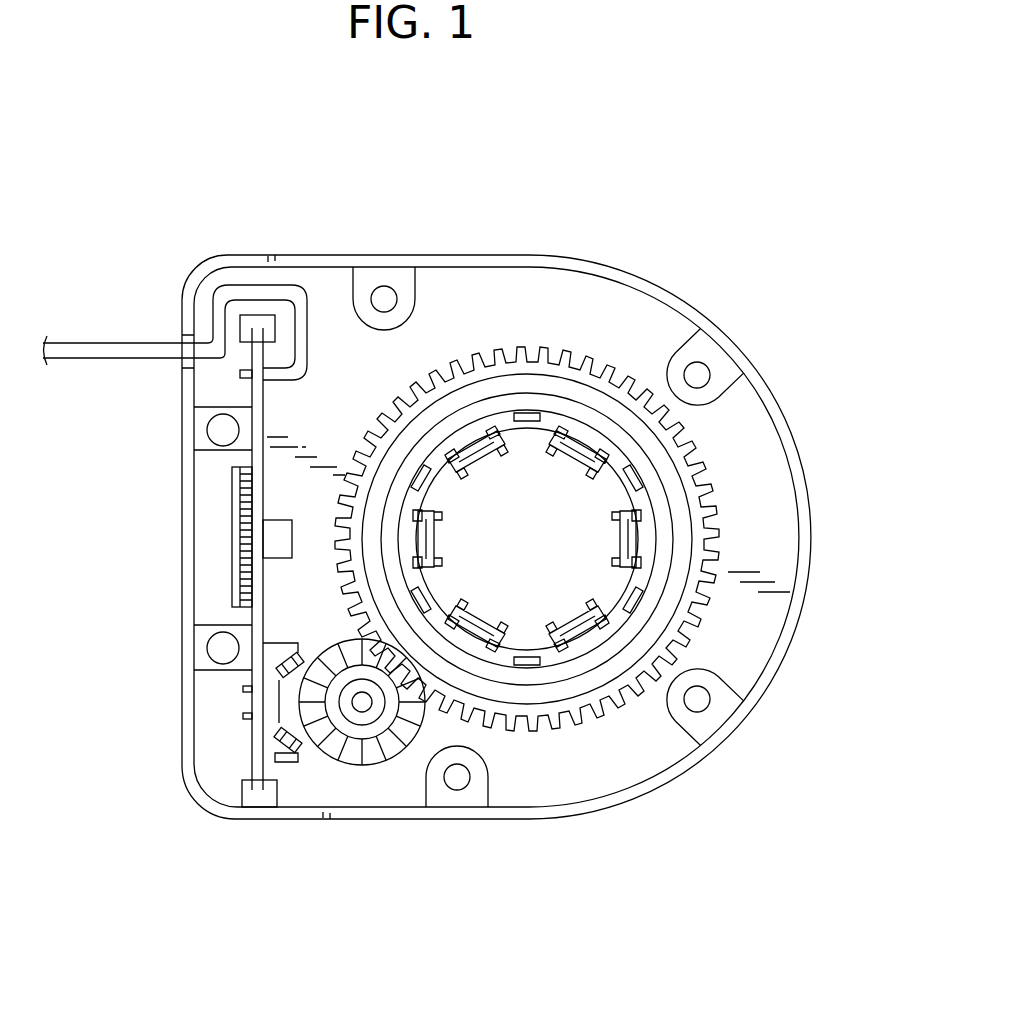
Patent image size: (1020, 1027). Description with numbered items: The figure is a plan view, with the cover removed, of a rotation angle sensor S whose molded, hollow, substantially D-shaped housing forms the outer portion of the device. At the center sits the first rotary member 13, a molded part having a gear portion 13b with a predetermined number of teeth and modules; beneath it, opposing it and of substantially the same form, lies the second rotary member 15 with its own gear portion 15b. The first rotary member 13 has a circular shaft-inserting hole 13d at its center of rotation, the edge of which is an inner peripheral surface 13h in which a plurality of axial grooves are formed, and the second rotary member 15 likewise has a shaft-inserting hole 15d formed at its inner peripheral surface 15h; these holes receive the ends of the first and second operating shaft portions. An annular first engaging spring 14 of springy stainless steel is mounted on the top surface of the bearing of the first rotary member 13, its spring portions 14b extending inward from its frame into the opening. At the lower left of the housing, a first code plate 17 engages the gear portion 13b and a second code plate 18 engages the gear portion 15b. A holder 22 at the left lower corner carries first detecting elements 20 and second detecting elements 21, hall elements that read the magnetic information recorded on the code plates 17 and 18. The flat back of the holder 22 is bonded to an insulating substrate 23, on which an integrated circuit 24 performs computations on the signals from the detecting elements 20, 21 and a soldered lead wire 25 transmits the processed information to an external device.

The rotation angle sensor S is at (220, 226).
The first rotary member 13 is at (573, 450).
The second rotary member 15 is at (527, 539).
The gear portion 13b is at (573, 488).
The gear portion 15b is at (617, 367).
The shaft-inserting hole 13d is at (654, 501).
The shaft-inserting hole 15d is at (578, 498).
The inner peripheral surface 13h is at (663, 568).
The inner peripheral surface 15h is at (626, 576).
The first engaging spring 14 is at (654, 428).
The spring portions 14b is at (438, 466).
The first code plate 17 is at (362, 769).
The second code plate 18 is at (362, 702).
The first detecting elements 20 is at (177, 702).
The second detecting elements 21 is at (221, 733).
The holder 22 is at (277, 754).
The substrate 23 is at (252, 617).
The integrated circuit 24 is at (232, 473).
The lead wire 25 is at (107, 350).